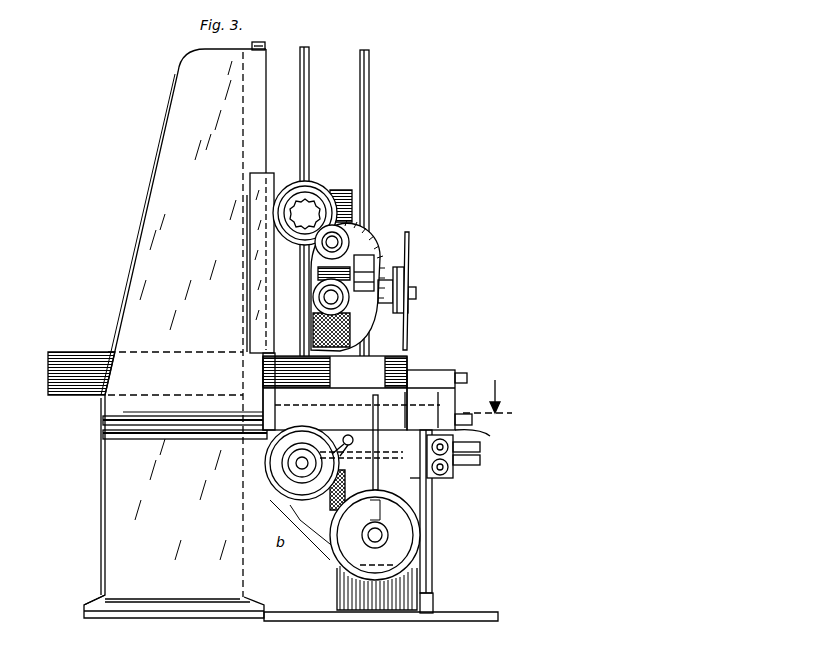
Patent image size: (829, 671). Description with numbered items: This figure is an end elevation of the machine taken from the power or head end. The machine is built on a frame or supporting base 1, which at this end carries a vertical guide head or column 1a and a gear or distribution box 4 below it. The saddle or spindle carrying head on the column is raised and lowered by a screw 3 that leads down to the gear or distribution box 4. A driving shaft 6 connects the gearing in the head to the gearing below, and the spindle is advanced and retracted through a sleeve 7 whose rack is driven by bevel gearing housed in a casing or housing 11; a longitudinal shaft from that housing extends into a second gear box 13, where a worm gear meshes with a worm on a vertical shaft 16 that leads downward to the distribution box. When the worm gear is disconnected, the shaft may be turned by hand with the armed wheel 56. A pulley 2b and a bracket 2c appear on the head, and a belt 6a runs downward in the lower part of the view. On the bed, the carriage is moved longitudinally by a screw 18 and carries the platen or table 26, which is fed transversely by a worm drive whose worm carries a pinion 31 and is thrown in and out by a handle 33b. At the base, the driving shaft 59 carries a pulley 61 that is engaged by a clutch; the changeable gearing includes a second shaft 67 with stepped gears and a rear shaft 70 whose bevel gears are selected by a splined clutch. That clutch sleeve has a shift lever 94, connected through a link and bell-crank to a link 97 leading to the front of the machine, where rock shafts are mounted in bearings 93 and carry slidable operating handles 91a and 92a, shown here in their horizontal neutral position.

The frame or supporting base 1 is at (105, 577).
The vertical guide head or column 1a is at (449, 594).
The pulley 2b is at (300, 213).
The guide bracket 2c is at (266, 291).
The screw 3 is at (266, 47).
The gear or distribution box 4 is at (377, 343).
The driving shaft 6 is at (309, 157).
The belt 6a is at (366, 442).
The sleeve 7 is at (320, 303).
The casing or housing 11 is at (372, 262).
The second gear box 13 is at (370, 232).
The vertical shaft 16 is at (369, 175).
The screw 18 is at (460, 372).
The platen or table 26 is at (97, 362).
The pinion 31 is at (510, 503).
The handle 33b is at (331, 310).
The armed wheel 56 is at (410, 285).
The driving shaft 59 is at (395, 532).
The pulley 61 is at (420, 540).
The second shaft 67 is at (407, 478).
The shaft 70 is at (263, 463).
The operating handle 91a is at (481, 447).
The operating handle 92a is at (481, 461).
The bearings 93 is at (449, 478).
The shift lever 94 is at (347, 435).
The link 97 is at (420, 444).